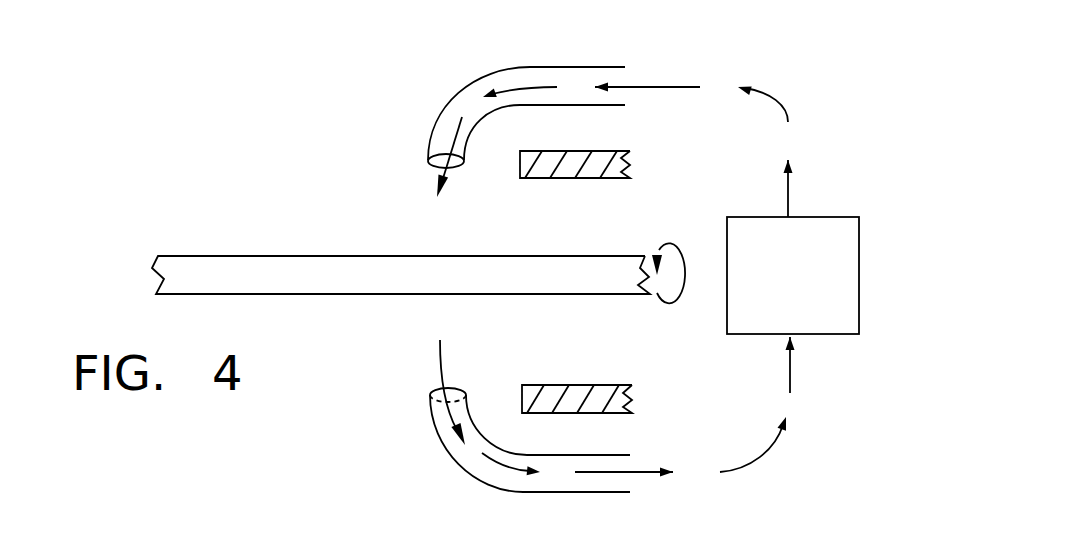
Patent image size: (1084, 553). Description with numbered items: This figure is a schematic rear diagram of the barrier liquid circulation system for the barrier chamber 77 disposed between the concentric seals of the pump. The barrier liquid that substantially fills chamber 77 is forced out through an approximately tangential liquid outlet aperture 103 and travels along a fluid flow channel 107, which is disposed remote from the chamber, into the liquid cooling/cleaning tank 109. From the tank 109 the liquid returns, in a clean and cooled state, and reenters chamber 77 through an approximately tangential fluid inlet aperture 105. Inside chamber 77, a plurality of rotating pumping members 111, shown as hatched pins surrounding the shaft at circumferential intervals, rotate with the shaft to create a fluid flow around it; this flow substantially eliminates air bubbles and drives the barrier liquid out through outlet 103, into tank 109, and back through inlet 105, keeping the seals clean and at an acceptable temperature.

The barrier chamber 77 is at (447, 317).
The tangential liquid outlet aperture 103 is at (433, 442).
The tangential fluid inlet aperture 105 is at (425, 178).
The fluid flow channel 107 is at (742, 466).
The liquid cooling/cleaning tank 109 is at (812, 227).
The rotating pumping members 111 is at (547, 160).